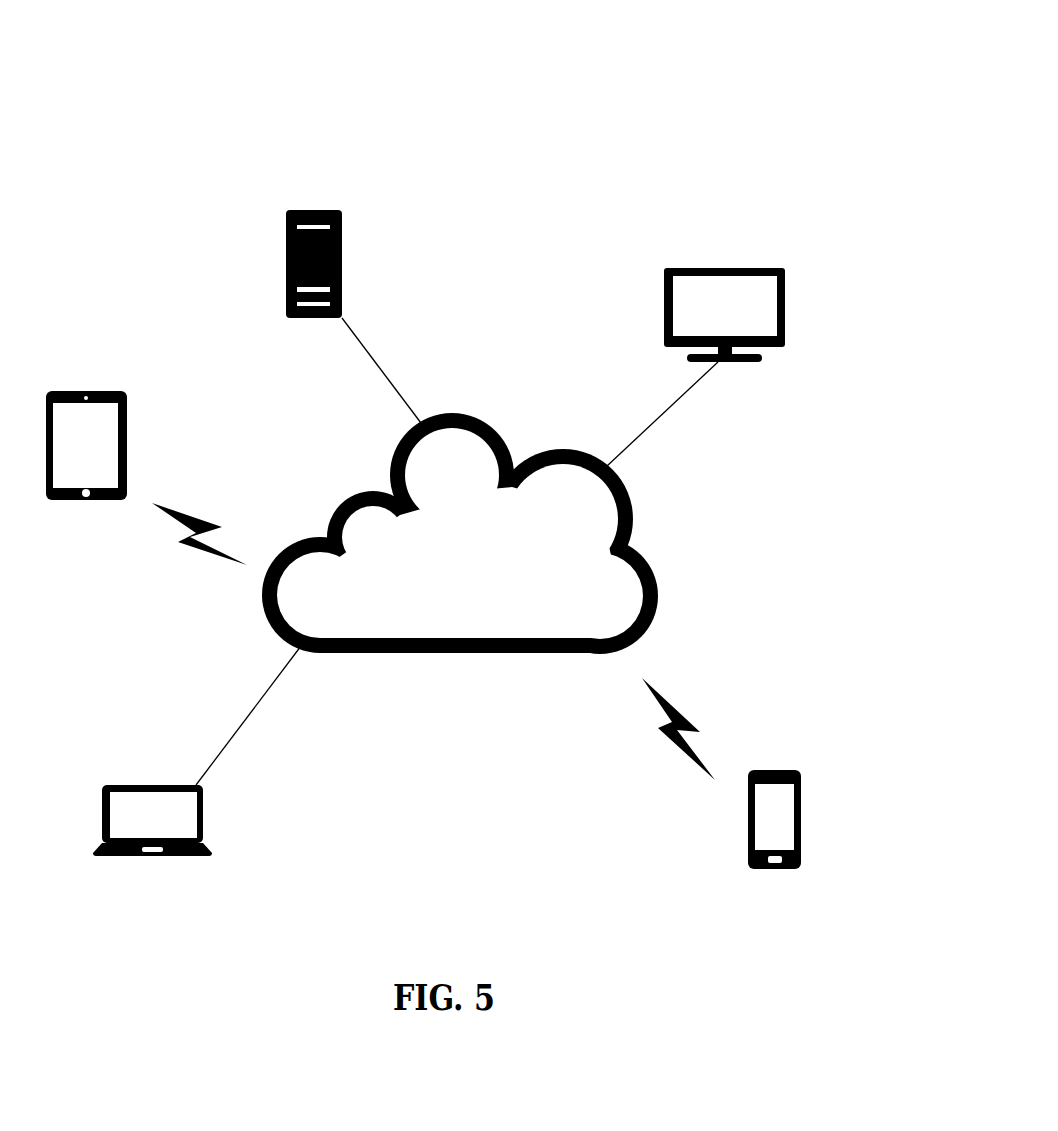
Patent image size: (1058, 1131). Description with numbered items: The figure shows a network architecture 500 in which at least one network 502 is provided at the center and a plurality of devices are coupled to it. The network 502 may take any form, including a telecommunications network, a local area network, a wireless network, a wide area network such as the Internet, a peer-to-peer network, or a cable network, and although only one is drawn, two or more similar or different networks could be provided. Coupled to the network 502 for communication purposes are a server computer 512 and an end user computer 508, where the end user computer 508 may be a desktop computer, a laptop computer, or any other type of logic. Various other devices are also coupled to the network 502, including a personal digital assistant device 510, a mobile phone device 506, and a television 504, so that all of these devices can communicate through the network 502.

The network architecture 500 is at (87, 84).
The network 502 is at (472, 654).
The television 504 is at (730, 268).
The mobile phone device 506 is at (765, 770).
The end user computer 508 is at (148, 785).
The personal digital assistant (PDA) device 510 is at (88, 391).
The server computer 512 is at (312, 210).